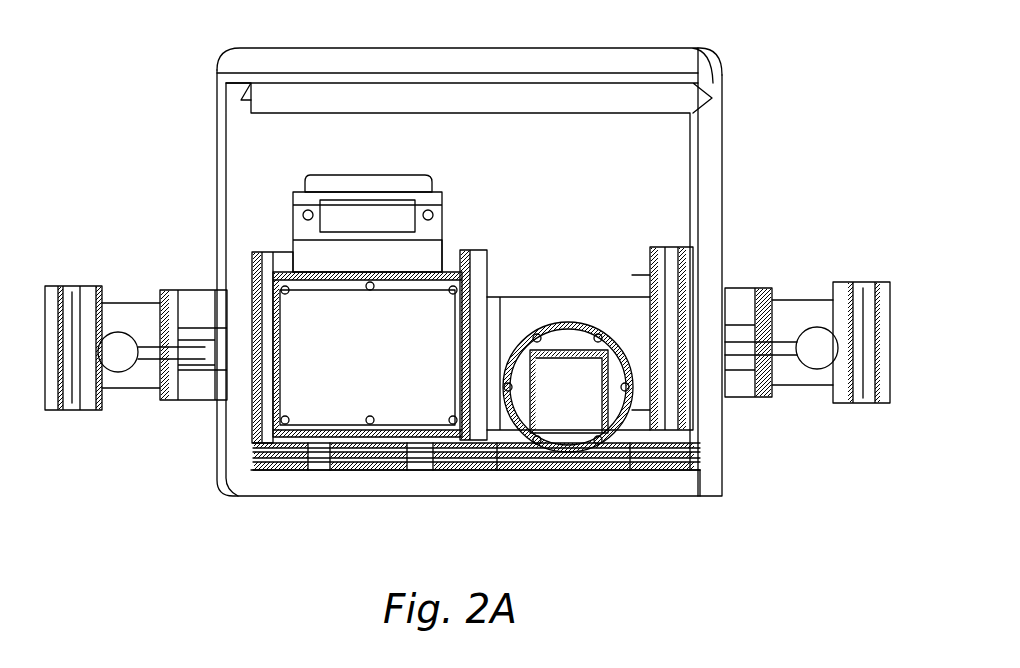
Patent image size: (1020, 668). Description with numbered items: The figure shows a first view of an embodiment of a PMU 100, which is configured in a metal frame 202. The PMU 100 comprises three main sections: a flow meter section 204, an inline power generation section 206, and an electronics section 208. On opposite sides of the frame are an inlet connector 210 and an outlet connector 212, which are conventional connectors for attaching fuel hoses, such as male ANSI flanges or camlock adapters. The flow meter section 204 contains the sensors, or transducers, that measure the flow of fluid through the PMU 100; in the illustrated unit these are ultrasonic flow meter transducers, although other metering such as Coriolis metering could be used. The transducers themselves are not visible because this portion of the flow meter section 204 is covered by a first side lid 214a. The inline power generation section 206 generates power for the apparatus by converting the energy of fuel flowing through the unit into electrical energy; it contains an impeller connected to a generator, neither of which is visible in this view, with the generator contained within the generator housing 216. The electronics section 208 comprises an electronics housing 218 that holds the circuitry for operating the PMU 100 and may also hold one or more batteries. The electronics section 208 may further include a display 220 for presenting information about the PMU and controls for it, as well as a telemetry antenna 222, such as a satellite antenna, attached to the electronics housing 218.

The PMU 100 is at (530, 301).
The metal frame 202 is at (330, 497).
The flow meter section 204 is at (297, 418).
The inline power generation section 206 is at (573, 260).
The electronics section 208 is at (451, 238).
The inlet connector 210 is at (818, 266).
The outlet connector 212 is at (120, 278).
The first side lid 214a is at (415, 405).
The generator housing 216 is at (573, 423).
The electronics housing 218 is at (319, 198).
The display 220 is at (415, 205).
The telemetry antenna 222 is at (357, 175).